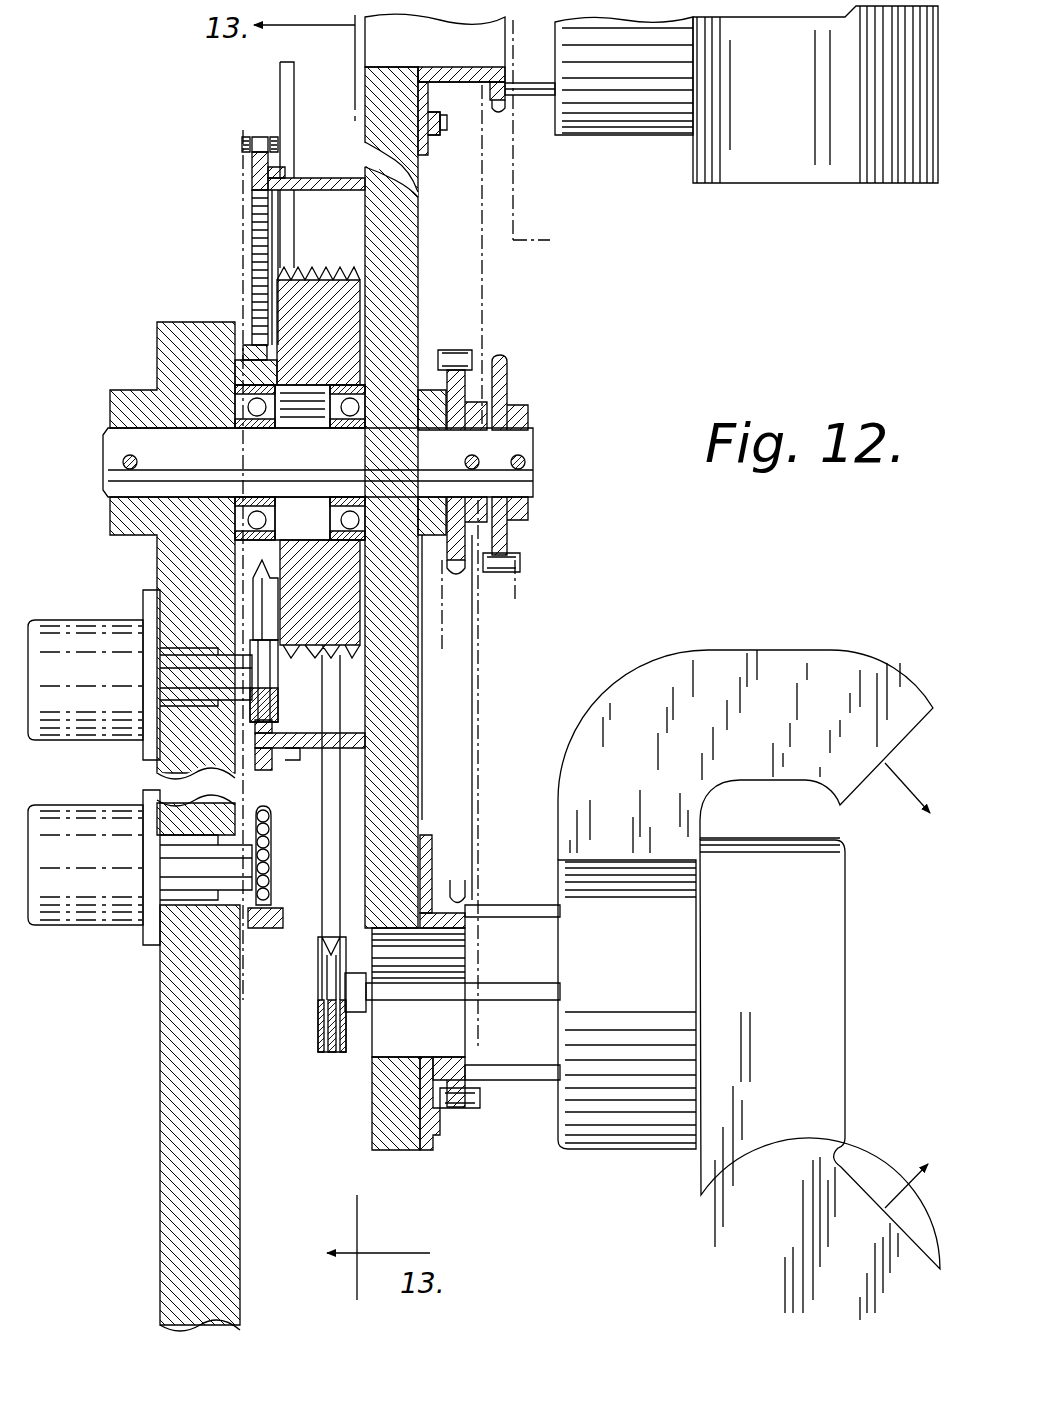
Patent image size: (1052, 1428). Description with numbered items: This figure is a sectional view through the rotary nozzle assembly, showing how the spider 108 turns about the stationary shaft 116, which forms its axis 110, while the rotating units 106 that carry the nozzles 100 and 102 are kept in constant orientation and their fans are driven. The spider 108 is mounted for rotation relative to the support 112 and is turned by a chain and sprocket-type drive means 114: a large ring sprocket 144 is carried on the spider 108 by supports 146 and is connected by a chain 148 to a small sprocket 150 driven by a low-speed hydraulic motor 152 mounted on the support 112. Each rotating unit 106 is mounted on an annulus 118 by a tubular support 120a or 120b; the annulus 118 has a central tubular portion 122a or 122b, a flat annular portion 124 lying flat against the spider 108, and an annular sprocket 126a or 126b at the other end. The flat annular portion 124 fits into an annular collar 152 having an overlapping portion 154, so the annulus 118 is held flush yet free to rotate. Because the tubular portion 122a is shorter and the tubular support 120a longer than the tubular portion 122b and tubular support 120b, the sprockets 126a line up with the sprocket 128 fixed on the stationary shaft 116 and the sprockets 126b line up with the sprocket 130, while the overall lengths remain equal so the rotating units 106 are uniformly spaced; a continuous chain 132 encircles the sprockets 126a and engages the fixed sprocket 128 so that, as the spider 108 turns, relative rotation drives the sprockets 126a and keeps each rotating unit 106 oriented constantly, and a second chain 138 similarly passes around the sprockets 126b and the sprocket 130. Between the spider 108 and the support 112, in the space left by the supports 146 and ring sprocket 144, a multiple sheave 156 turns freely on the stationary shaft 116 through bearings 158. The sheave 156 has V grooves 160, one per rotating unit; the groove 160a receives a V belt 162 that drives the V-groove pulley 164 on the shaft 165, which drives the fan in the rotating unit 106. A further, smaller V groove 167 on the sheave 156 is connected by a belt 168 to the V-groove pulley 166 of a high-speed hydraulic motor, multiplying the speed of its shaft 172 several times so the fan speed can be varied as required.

The nozzle 100 is at (898, 683).
The nozzle 102 is at (905, 184).
The rotating unit 106 is at (722, 214).
The spider 108 is at (416, 745).
The axis 110 is at (567, 453).
The support 112 is at (172, 1143).
The chain and sprocket-type drive means 114 is at (208, 147).
The stationary shaft 116 is at (125, 444).
The annulus 118 is at (472, 1108).
The tubular support 120a is at (522, 905).
The tubular support 120b is at (542, 96).
The tubular portion 122a is at (456, 1058).
The tubular portion 122b is at (456, 58).
The flat annular portion 124 is at (430, 1096).
The sprocket 126a is at (466, 1070).
The sprocket 126b is at (508, 118).
The sprocket 128 is at (500, 379).
The sprocket 130 is at (462, 573).
The continuous chain 132 is at (520, 243).
The axis line 138 is at (482, 700).
The ring sprocket 144 is at (240, 173).
The supports 146 is at (338, 164).
The chain 148 is at (247, 137).
The small sprocket 150 is at (282, 880).
The low-speed hydraulic motor / annular collar 152 is at (428, 158).
The overlapping portion 154 is at (438, 122).
The multiple sheave 156 is at (368, 335).
The bearings 158 is at (345, 528).
The V grooves 160 is at (263, 266).
The V groove 160a is at (350, 280).
The V belt 162 is at (326, 268).
The V-groove pulley 164 is at (323, 990).
The shaft 165 is at (512, 984).
The V-groove pulley 166 is at (272, 673).
The V groove 167 is at (255, 578).
The belt 168 is at (258, 342).
The shaft 172 is at (95, 630).